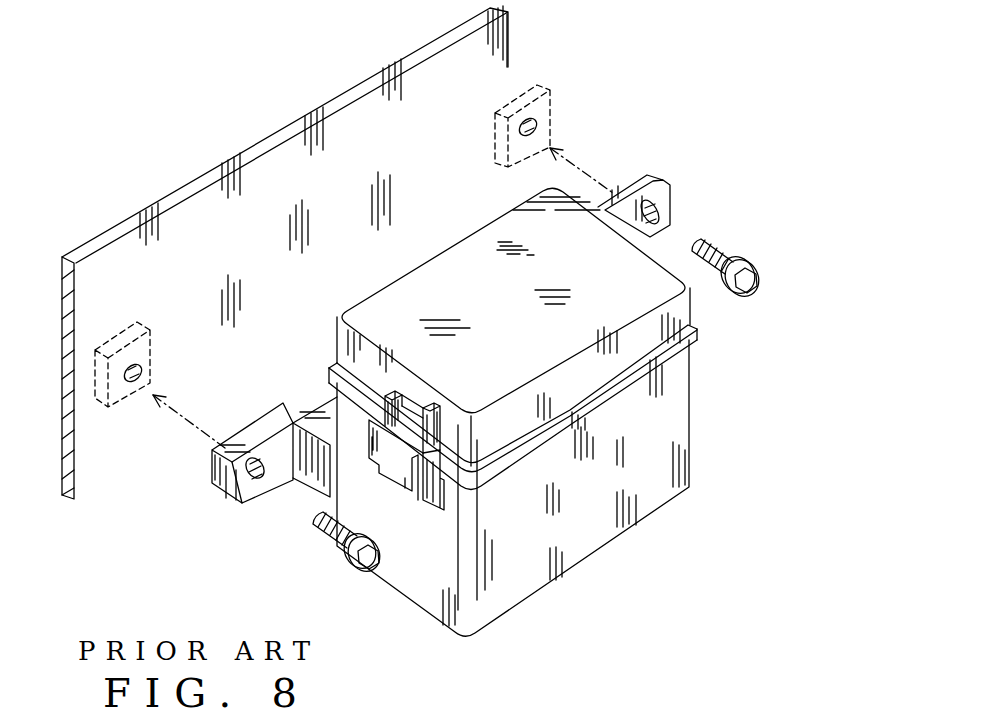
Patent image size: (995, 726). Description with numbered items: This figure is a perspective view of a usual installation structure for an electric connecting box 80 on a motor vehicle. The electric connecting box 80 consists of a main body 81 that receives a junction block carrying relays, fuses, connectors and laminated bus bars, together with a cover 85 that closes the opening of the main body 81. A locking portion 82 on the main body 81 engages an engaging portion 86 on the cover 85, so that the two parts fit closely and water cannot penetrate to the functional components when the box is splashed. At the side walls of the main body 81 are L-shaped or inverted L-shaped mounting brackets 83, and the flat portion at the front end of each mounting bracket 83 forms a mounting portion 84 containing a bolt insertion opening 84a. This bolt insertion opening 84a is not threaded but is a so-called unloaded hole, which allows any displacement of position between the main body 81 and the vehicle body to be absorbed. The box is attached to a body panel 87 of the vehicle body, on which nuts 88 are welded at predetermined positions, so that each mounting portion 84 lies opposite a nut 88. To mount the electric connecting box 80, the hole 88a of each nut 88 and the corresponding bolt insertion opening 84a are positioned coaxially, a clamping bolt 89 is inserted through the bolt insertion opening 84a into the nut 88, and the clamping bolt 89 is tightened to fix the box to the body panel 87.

The electric connecting box 80 is at (593, 405).
The main body 81 is at (802, 337).
The locking portion 82 is at (437, 517).
The mounting bracket 83 is at (317, 410).
The mounting portion 84 is at (250, 469).
The bolt insertion opening 84a is at (253, 470).
The cover 85 is at (700, 316).
The engaging portion 86 is at (443, 430).
The body panel 87 is at (272, 133).
The nut 88 is at (157, 335).
The hole of the nut 88a is at (133, 384).
The clamping bolt 89 is at (730, 257).